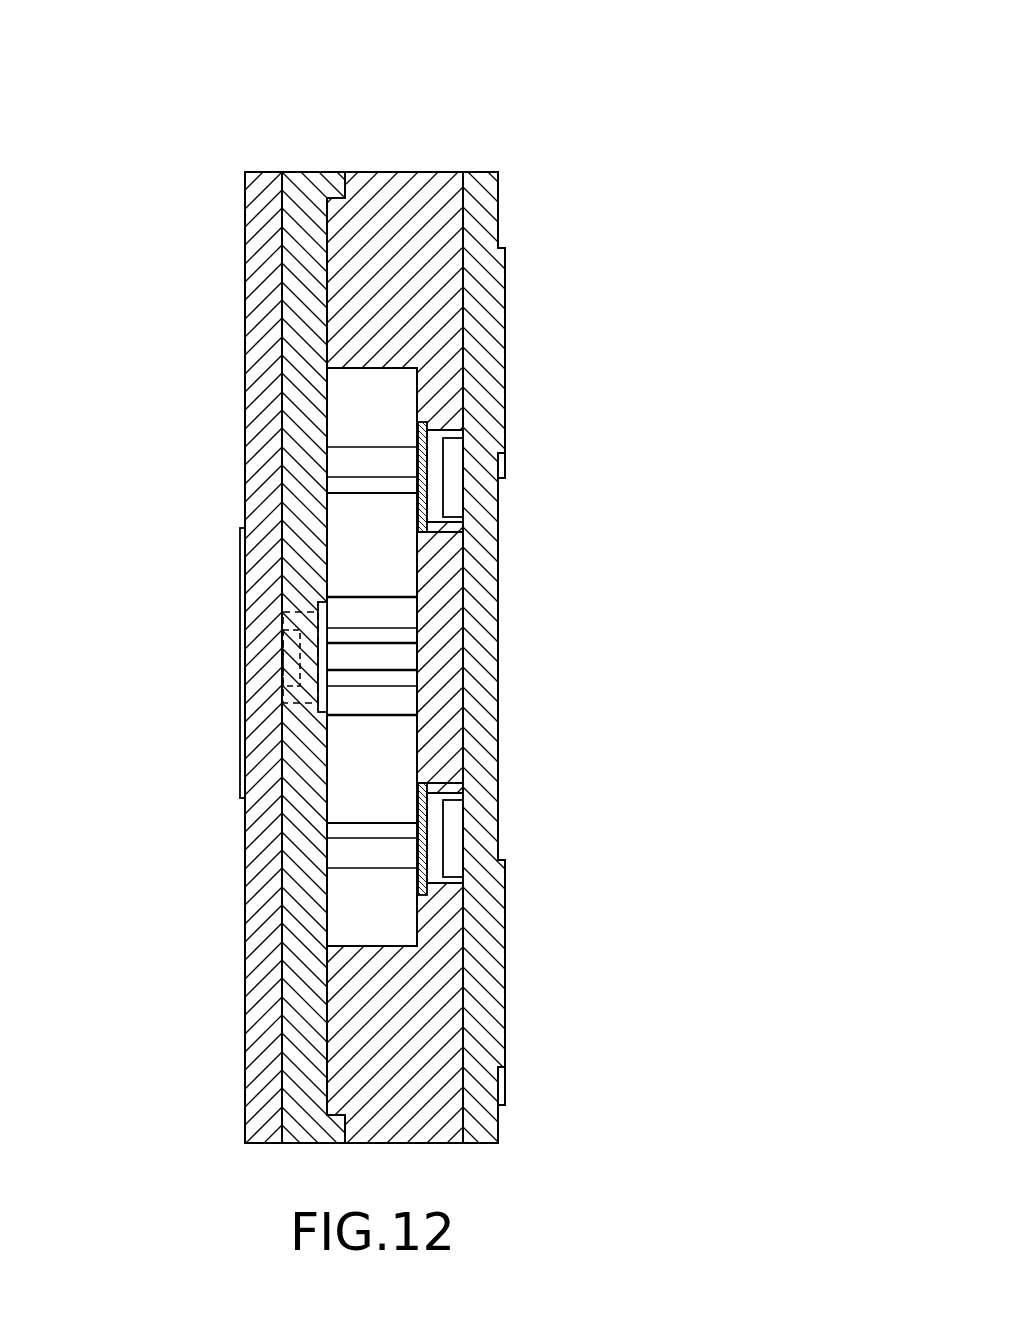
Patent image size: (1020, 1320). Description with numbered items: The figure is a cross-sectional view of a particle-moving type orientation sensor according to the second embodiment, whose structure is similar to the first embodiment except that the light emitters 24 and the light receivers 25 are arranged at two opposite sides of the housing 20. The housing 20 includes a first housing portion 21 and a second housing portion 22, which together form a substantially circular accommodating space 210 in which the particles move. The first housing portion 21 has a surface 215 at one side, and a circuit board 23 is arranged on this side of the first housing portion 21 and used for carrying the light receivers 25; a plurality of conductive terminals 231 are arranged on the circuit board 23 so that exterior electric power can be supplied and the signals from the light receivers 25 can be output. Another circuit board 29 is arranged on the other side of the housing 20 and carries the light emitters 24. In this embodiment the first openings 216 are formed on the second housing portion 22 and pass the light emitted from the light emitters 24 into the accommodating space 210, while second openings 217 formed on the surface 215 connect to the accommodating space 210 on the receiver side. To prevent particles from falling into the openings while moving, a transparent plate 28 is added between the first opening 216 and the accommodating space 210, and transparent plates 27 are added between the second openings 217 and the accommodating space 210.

The housing 20 is at (403, 55).
The first housing portion 21 is at (385, 175).
The second housing portion 22 is at (315, 175).
The circuit board 23 is at (483, 175).
The light emitter 24 is at (257, 642).
The light receiver 25 is at (453, 473).
The transparent plate 27 is at (417, 463).
The transparent plate 28 is at (322, 617).
The circuit board 29 is at (260, 255).
The accommodating space 210 is at (340, 418).
The surface 215 is at (470, 175).
The first opening 216 is at (285, 733).
The second opening 217 is at (462, 548).
The conductive terminal 231 is at (500, 325).